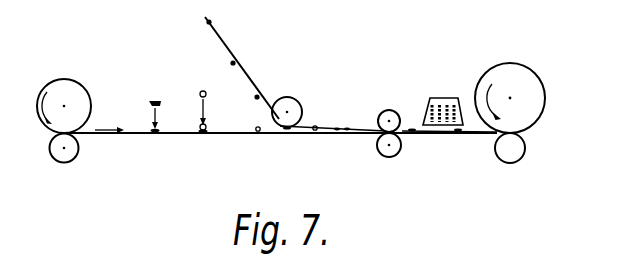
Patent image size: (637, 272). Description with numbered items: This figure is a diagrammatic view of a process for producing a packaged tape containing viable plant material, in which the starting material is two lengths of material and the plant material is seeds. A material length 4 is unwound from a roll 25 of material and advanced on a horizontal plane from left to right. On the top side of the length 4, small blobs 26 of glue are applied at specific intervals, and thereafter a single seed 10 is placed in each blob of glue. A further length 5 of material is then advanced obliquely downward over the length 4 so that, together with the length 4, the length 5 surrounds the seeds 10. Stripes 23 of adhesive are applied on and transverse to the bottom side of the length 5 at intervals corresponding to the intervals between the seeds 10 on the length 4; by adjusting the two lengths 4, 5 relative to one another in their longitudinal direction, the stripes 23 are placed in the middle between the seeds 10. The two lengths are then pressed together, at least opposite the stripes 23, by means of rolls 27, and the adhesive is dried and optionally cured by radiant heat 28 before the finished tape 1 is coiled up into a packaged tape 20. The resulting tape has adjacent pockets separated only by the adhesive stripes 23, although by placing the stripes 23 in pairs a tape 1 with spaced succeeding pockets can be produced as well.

The tape 1 is at (478, 133).
The material length 4 is at (133, 135).
The further length of material 5 is at (248, 72).
The seeds 10 is at (197, 129).
The packaged tape 20 is at (533, 97).
The stripes of adhesive 23 is at (233, 63).
The roll of material 25 is at (63, 88).
The blobs of glue 26 is at (149, 130).
The rolls 27 is at (390, 109).
The radiant heat 28 is at (445, 85).